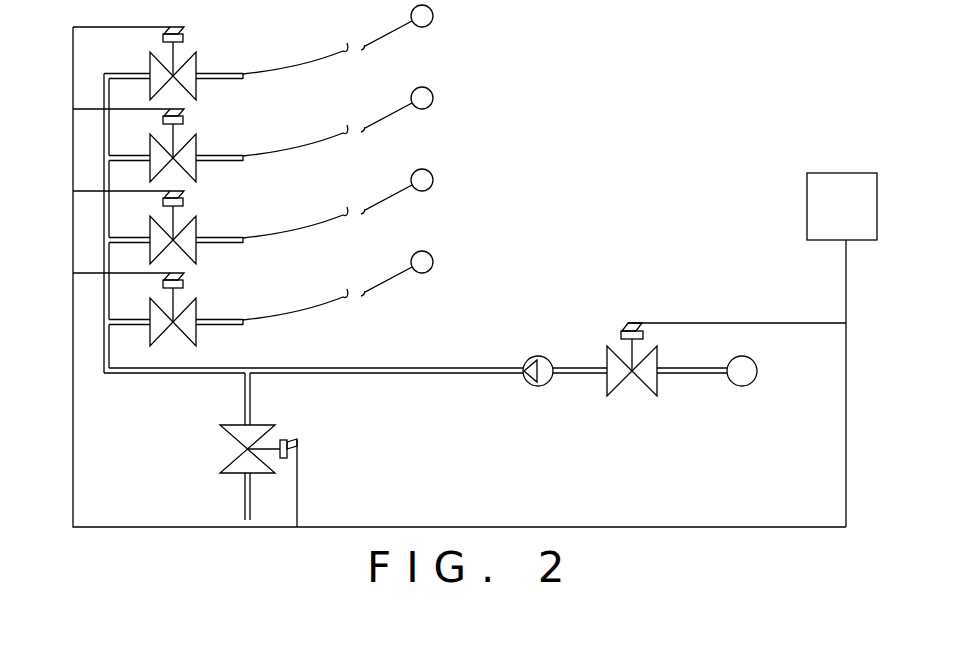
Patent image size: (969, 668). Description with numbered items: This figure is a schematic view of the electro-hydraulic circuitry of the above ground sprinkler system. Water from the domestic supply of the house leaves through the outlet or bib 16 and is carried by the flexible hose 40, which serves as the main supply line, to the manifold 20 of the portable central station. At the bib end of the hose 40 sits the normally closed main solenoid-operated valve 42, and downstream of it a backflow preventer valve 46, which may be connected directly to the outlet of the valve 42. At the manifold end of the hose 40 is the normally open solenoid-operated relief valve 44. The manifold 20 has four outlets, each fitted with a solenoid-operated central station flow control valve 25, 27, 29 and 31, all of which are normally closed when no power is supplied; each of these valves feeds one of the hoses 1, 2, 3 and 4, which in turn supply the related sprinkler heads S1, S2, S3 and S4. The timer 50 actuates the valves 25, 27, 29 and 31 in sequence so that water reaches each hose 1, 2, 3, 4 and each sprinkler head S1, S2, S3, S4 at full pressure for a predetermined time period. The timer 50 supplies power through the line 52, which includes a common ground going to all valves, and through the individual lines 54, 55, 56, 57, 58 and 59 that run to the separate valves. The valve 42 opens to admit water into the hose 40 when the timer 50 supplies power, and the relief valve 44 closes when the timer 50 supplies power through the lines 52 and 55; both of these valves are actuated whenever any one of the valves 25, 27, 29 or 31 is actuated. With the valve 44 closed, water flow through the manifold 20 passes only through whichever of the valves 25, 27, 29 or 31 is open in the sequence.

The hose 1 is at (290, 313).
The hose 2 is at (298, 232).
The hose 3 is at (284, 148).
The hose 4 is at (277, 66).
The outlet or bib 16 is at (733, 386).
The manifold 20 is at (104, 141).
The solenoid-operated central station flow control valve 25 is at (198, 311).
The solenoid-operated central station flow control valve 27 is at (198, 232).
The solenoid-operated central station flow control valve 29 is at (197, 150).
The solenoid-operated central station flow control valve 31 is at (197, 63).
The flexible hose 40 is at (391, 373).
The main solenoid-operated valve 42 is at (654, 362).
The relief valve 44 is at (243, 448).
The backflow preventer valve 46 is at (548, 386).
The timer 50 is at (845, 172).
The line 52 is at (847, 278).
The line 54 is at (717, 323).
The line 55 is at (298, 478).
The line 56 is at (92, 274).
The line 57 is at (92, 192).
The line 58 is at (93, 110).
The line 59 is at (94, 28).
The sprinkler head S1 is at (438, 262).
The sprinkler head S2 is at (437, 180).
The sprinkler head S3 is at (437, 98).
The sprinkler head S4 is at (437, 16).